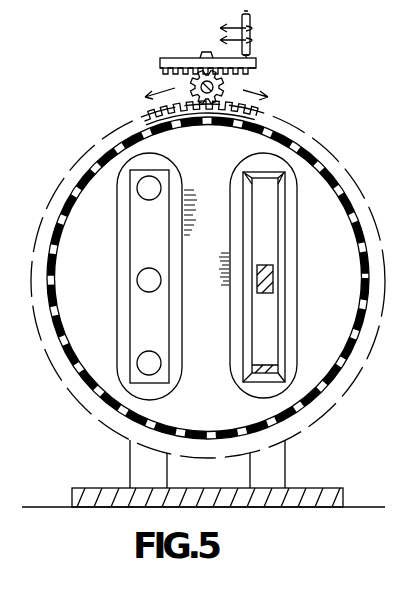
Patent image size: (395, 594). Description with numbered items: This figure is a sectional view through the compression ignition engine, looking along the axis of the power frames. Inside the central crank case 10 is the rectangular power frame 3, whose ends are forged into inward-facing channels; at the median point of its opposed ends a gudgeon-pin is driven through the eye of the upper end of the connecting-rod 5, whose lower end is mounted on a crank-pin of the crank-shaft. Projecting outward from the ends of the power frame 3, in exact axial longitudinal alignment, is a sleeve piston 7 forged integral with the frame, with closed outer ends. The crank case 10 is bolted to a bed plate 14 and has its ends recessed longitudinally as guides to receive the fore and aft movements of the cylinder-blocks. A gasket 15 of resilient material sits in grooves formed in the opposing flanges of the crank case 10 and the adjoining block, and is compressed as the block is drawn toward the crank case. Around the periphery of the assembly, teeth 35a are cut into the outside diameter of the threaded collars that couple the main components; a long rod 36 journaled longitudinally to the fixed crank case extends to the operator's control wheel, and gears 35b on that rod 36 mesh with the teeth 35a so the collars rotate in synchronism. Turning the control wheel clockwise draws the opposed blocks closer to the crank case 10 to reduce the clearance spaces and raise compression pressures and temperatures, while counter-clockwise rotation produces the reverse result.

The power frame 3 is at (130, 227).
The connecting-rod 5 is at (273, 280).
The sleeve piston 7 is at (150, 285).
The crank case 10 is at (333, 243).
The bed plate 14 is at (327, 488).
The gasket 15 is at (308, 148).
The teeth 35a is at (148, 104).
The gears 35b is at (190, 82).
The long rod 36 is at (225, 81).